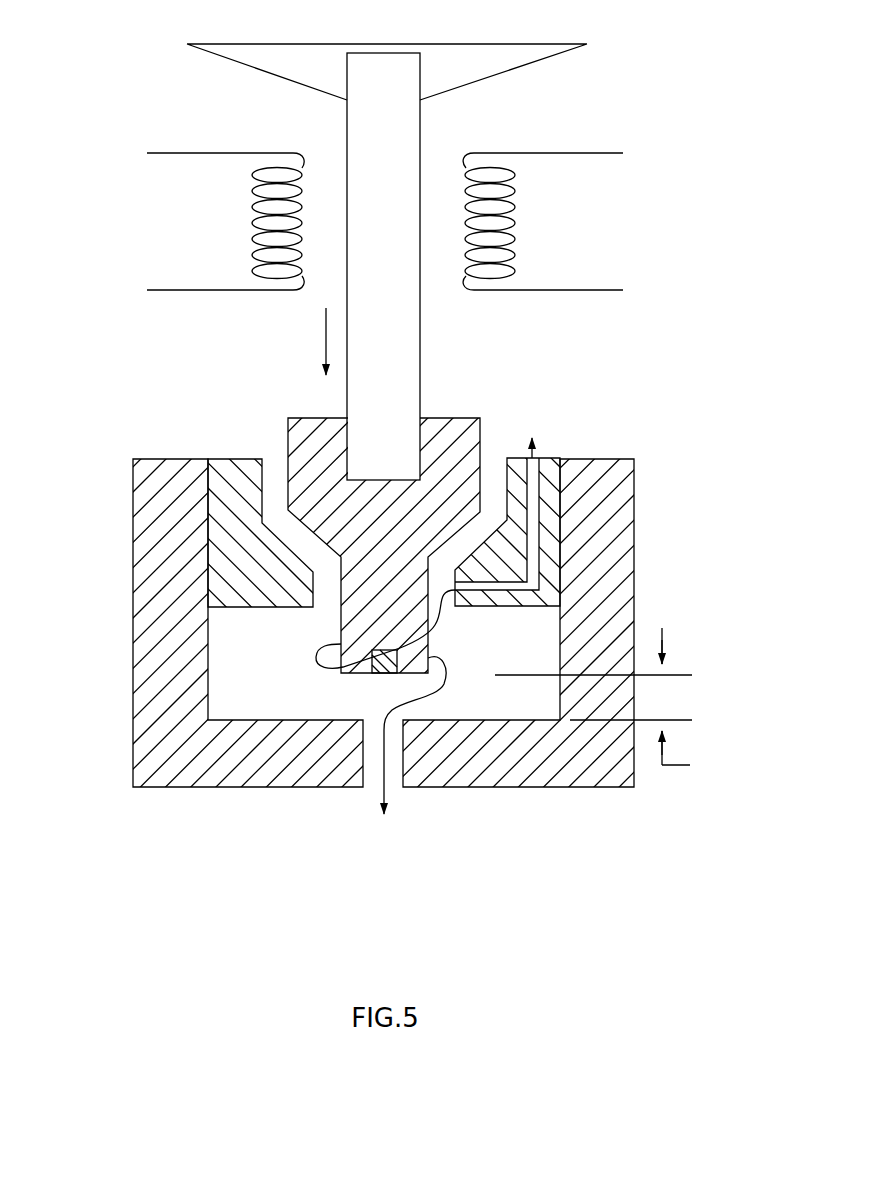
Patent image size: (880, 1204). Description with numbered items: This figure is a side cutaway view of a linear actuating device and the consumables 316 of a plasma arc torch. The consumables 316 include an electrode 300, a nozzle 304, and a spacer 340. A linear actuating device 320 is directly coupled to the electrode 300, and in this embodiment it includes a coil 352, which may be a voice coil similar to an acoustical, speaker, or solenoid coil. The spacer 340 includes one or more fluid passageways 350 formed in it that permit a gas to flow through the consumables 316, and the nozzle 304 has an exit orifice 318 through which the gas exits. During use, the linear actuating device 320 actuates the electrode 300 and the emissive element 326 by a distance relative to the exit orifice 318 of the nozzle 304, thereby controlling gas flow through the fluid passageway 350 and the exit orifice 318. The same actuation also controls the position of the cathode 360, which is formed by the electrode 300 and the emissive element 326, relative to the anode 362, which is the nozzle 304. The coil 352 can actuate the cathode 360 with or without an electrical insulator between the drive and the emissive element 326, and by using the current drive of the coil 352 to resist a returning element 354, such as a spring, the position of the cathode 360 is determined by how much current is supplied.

The electrode 300 is at (420, 130).
The nozzle 304 is at (634, 490).
The consumables 316 is at (440, 563).
The exit orifice 318 is at (402, 798).
The linear actuating device 320 is at (410, 212).
The emissive element 326 is at (372, 665).
The spacer 340 is at (240, 462).
The fluid passageway 350 is at (547, 580).
The coil 352 is at (515, 205).
The returning element 354 is at (197, 48).
The cathode 360 is at (294, 404).
The anode 362 is at (140, 691).